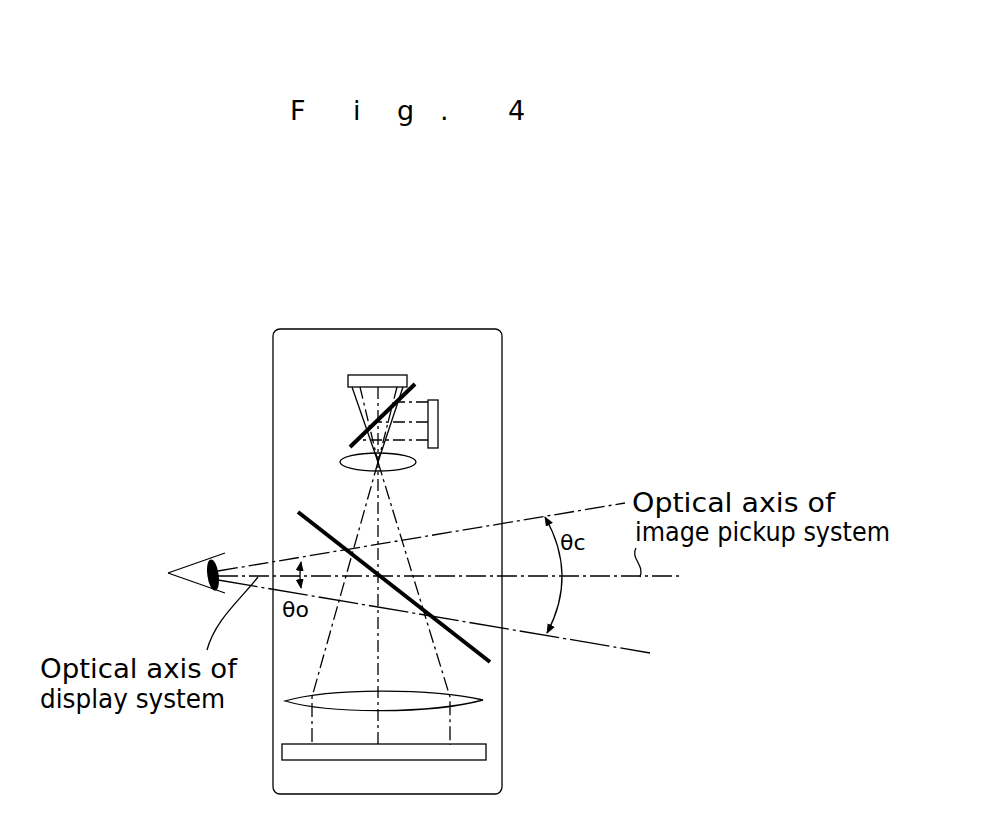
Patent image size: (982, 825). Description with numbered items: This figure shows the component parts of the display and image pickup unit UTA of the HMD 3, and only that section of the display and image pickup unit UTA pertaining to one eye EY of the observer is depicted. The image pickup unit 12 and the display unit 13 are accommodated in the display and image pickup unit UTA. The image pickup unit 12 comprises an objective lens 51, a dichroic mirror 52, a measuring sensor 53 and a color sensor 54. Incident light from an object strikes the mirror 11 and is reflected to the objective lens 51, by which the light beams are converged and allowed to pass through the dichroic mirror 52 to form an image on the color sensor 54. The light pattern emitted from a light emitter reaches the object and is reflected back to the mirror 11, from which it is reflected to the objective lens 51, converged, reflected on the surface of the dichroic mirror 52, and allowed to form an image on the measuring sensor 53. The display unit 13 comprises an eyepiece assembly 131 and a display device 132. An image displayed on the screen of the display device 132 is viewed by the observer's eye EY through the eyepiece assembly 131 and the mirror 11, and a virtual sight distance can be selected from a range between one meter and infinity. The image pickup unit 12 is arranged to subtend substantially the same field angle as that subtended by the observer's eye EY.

The HMD 3 is at (255, 298).
The display and image pickup unit UTA is at (443, 329).
The mirror 11 is at (304, 519).
The image pickup unit 12 is at (553, 386).
The objective lens 51 is at (417, 462).
The dichroic mirror 52 is at (416, 388).
The measuring sensor 53 is at (438, 445).
The color sensor 54 is at (380, 375).
The display unit 13 is at (543, 730).
The eyepiece assembly 131 is at (483, 700).
The display device 132 is at (486, 752).
The eye EY is at (192, 565).